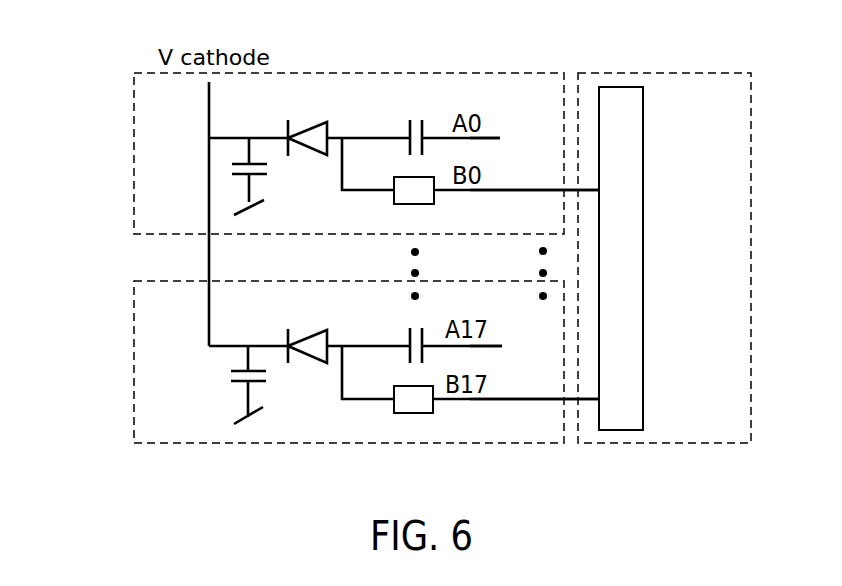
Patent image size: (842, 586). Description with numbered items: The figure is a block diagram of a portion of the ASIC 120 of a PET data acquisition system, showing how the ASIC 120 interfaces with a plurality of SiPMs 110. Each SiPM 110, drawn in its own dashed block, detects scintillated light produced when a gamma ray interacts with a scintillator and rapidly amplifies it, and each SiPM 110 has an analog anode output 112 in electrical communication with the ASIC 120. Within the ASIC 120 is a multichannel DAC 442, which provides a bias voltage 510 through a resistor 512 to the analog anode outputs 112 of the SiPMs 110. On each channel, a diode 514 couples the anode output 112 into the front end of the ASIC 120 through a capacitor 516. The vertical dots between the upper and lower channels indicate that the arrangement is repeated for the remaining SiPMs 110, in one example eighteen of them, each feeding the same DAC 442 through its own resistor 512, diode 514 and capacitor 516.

The SiPM 110 is at (134, 137).
The diode 514 is at (313, 126).
The capacitor 516 is at (404, 128).
The analog anode output 112 is at (492, 133).
The resistor 512 is at (413, 204).
The bias voltage 510 is at (498, 193).
The ASIC 120 is at (713, 72).
The DAC 442 is at (645, 135).